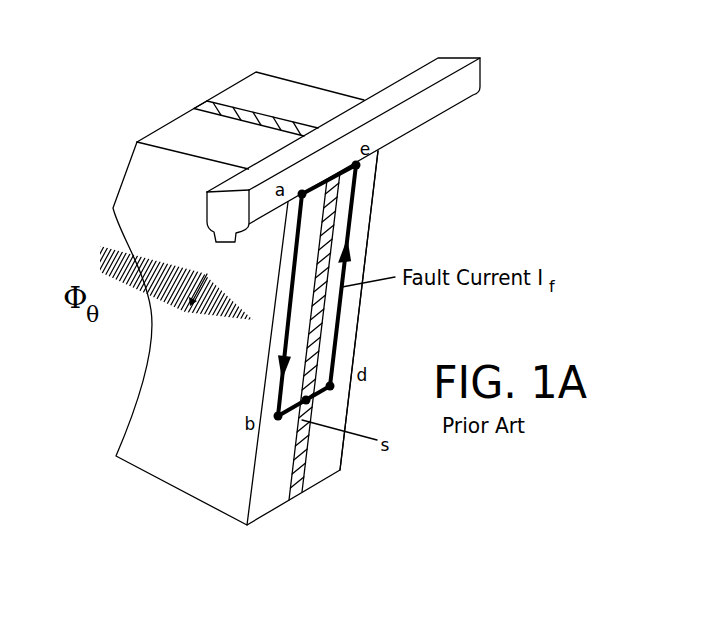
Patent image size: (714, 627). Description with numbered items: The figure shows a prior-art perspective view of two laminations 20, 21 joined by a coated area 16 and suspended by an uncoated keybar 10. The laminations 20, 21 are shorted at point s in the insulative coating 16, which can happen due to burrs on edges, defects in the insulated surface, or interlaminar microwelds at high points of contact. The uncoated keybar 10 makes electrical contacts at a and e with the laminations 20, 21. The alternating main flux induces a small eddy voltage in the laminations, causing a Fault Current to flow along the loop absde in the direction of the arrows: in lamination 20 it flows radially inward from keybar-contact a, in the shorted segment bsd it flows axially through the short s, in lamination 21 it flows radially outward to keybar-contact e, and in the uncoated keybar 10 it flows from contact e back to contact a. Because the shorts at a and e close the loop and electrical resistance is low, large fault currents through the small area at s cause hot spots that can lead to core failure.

The uncoated keybar 10 is at (402, 80).
The coated area 16 is at (295, 490).
The lamination 20 is at (250, 480).
The lamination 21 is at (368, 223).